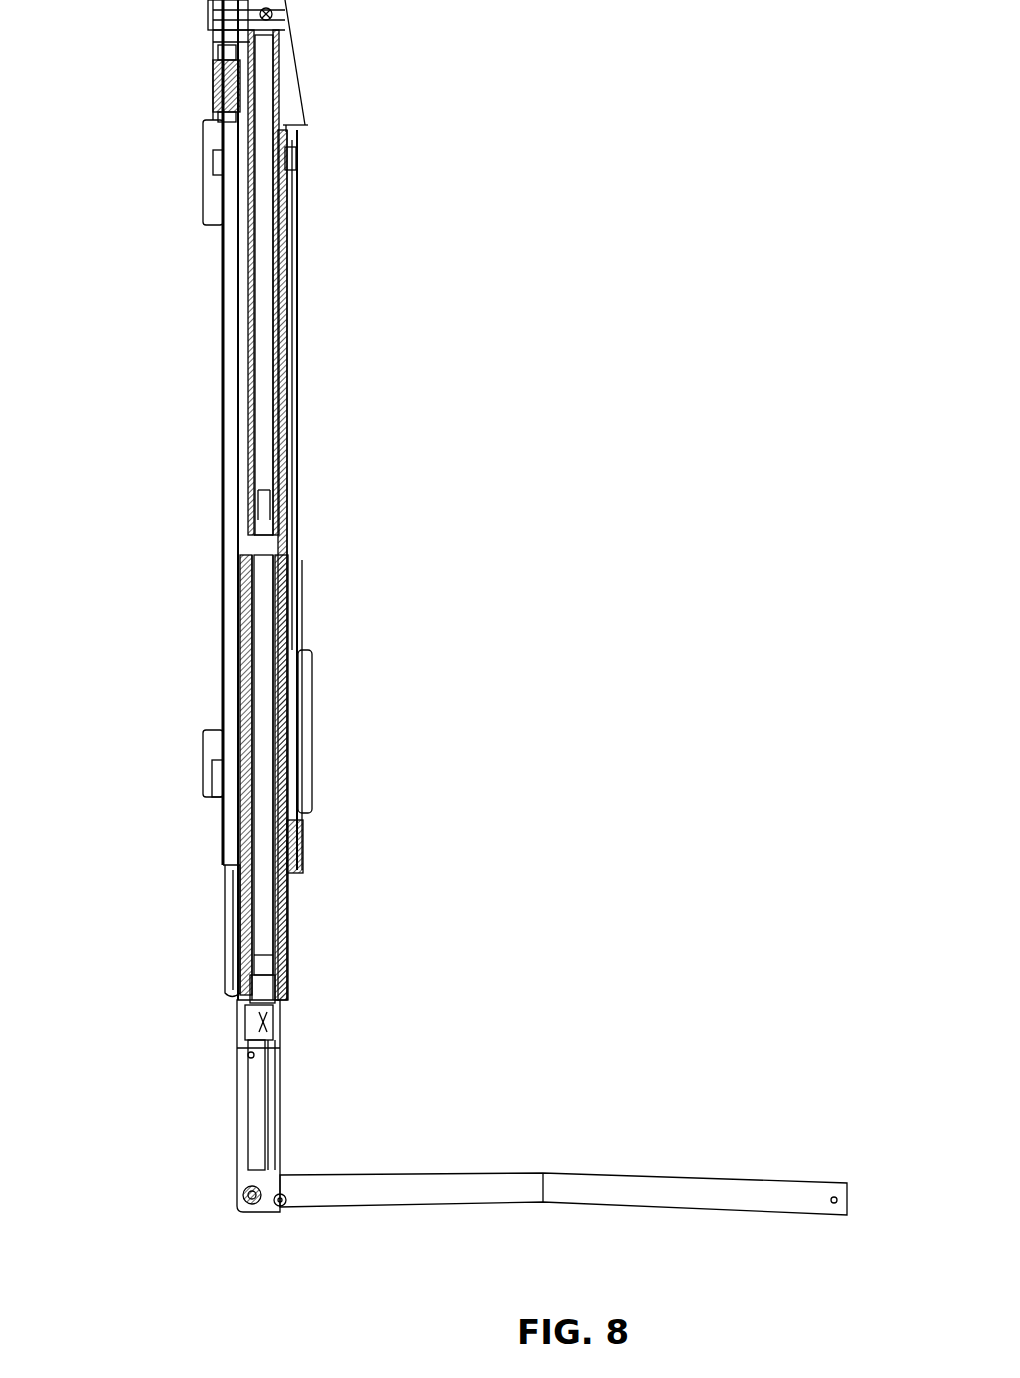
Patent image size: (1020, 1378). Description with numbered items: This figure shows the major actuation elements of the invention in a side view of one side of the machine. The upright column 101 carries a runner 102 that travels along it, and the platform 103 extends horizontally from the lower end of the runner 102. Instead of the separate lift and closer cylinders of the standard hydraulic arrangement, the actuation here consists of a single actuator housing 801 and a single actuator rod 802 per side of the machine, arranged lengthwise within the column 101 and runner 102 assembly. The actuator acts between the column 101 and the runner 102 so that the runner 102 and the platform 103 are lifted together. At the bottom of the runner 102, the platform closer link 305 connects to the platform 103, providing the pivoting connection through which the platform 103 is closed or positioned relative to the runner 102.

The column 101 is at (257, 500).
The runner 102 is at (240, 1105).
The platform 103 is at (462, 1173).
The platform closer link 305 is at (282, 1210).
The single actuator housing 801 is at (265, 340).
The single actuator rod 802 is at (262, 930).